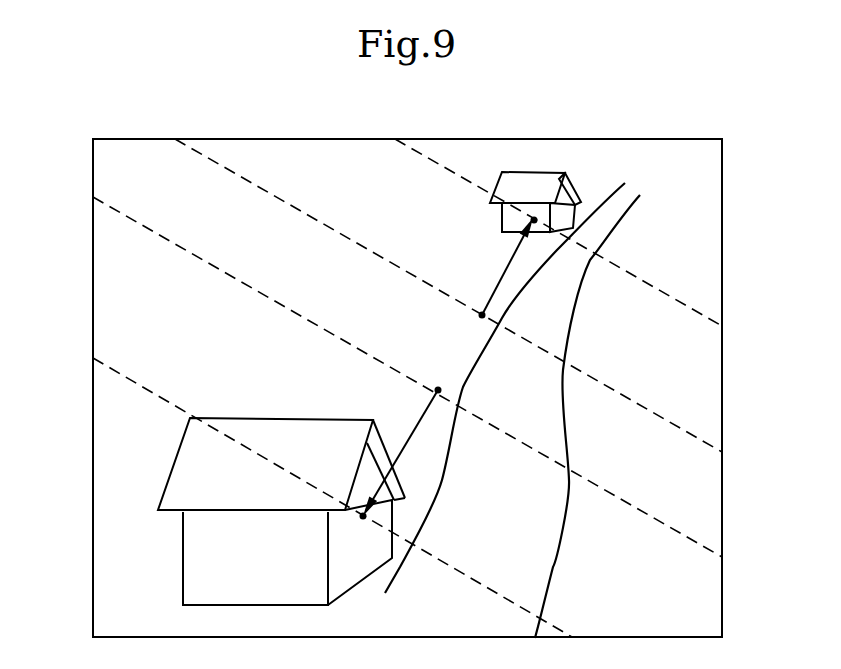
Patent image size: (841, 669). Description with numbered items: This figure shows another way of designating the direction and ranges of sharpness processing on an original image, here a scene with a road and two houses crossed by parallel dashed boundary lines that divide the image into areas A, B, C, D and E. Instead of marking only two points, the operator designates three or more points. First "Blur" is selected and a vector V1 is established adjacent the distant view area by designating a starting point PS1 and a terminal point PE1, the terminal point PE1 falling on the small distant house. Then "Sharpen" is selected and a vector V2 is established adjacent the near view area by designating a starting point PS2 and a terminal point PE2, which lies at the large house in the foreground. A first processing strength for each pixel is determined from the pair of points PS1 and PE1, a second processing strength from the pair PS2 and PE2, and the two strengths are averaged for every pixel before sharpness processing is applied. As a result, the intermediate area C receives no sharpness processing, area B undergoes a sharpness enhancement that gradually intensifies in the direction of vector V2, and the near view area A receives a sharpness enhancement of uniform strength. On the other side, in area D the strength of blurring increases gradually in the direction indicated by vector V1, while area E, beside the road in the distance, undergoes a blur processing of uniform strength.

The near view area A is at (131, 445).
The area B is at (131, 320).
The area C is at (132, 176).
The area D is at (280, 164).
The area E is at (699, 236).
The terminal point PE1 is at (534, 218).
The terminal point PE2 is at (361, 518).
The starting point PS1 is at (480, 315).
The starting point PS2 is at (457, 364).
The vector V1 is at (504, 272).
The vector V2 is at (416, 423).